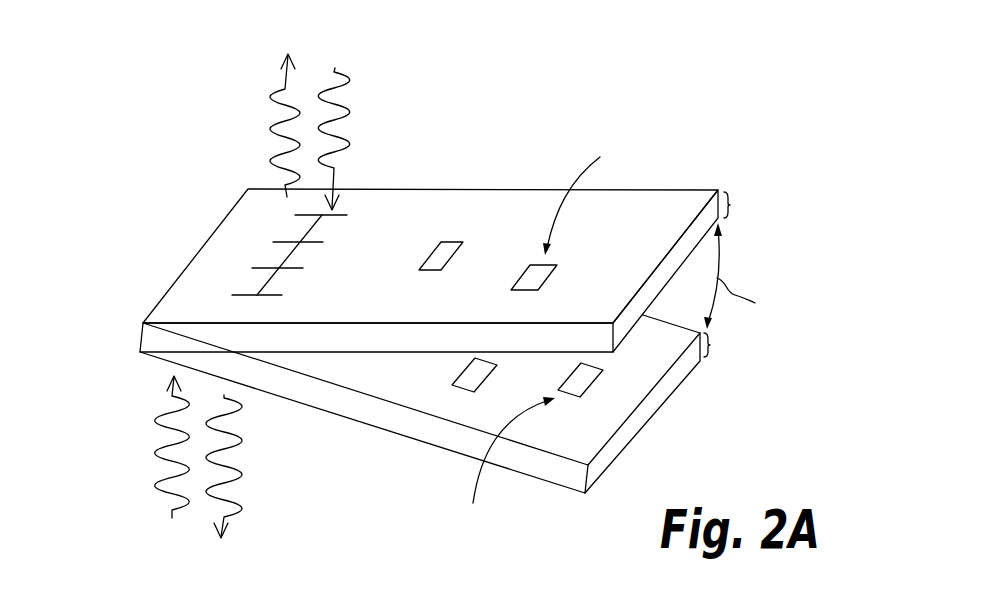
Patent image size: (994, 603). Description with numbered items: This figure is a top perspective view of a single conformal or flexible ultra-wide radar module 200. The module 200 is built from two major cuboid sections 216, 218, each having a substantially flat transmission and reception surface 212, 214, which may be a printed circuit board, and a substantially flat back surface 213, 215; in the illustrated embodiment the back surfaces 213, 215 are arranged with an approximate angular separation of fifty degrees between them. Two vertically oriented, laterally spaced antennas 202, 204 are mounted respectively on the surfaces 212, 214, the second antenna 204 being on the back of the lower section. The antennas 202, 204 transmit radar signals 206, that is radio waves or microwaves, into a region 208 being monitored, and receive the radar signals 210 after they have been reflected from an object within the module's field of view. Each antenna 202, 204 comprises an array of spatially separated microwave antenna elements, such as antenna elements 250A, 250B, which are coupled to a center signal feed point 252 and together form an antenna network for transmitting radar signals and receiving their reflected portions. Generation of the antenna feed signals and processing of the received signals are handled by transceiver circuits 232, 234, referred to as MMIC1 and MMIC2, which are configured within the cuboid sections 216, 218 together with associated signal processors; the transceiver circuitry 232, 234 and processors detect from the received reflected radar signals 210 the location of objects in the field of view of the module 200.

The radar module 200 is at (741, 134).
The antenna 202 is at (270, 240).
The antenna 204 is at (151, 369).
The radar signals 206 is at (268, 100).
The region being monitored 208 is at (332, 45).
The received radar signals 210 is at (345, 157).
The transmission and reception surface 212 is at (647, 246).
The back surface 213 is at (700, 242).
The transmission and reception surface 214 is at (567, 490).
The back surface 215 is at (658, 380).
The cuboid section 216 is at (731, 205).
The cuboid section 218 is at (711, 345).
The transceiver circuit 232 is at (448, 226).
The transceiver circuit 234 is at (444, 396).
The antenna element 250A is at (270, 297).
The antenna element 250B is at (340, 215).
The center signal feed point 252 is at (283, 257).